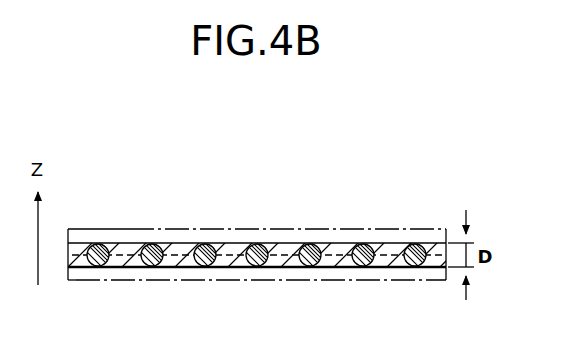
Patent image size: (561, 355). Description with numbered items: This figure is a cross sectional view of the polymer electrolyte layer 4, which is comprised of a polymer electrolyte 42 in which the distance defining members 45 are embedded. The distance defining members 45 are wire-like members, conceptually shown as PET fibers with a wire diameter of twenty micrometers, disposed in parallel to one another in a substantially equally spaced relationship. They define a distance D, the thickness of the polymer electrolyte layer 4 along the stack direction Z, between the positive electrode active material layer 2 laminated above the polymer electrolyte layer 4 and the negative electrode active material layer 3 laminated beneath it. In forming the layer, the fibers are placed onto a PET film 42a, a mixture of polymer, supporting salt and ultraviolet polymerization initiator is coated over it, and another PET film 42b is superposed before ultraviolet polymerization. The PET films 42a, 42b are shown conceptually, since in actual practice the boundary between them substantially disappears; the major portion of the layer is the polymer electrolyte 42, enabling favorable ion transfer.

The positive electrode active material layer 2 is at (148, 231).
The negative electrode active material layer 3 is at (123, 282).
The polymer electrolyte layer 4 is at (211, 189).
The polymer electrolyte 42 is at (383, 270).
The PET film 42a is at (77, 267).
The PET film 42b is at (76, 249).
The distance defining members 45 is at (258, 247).